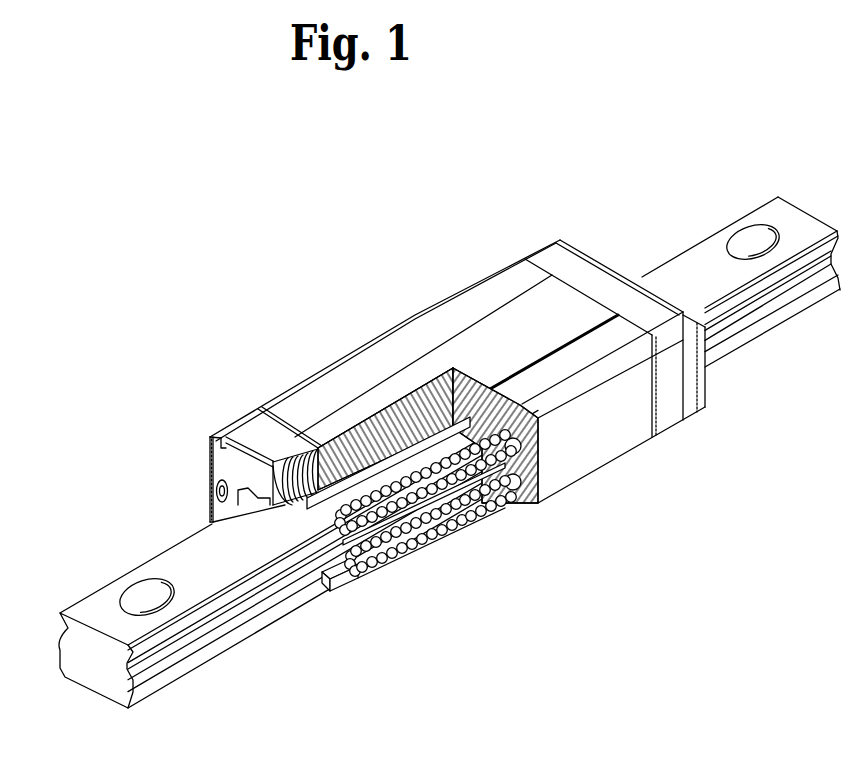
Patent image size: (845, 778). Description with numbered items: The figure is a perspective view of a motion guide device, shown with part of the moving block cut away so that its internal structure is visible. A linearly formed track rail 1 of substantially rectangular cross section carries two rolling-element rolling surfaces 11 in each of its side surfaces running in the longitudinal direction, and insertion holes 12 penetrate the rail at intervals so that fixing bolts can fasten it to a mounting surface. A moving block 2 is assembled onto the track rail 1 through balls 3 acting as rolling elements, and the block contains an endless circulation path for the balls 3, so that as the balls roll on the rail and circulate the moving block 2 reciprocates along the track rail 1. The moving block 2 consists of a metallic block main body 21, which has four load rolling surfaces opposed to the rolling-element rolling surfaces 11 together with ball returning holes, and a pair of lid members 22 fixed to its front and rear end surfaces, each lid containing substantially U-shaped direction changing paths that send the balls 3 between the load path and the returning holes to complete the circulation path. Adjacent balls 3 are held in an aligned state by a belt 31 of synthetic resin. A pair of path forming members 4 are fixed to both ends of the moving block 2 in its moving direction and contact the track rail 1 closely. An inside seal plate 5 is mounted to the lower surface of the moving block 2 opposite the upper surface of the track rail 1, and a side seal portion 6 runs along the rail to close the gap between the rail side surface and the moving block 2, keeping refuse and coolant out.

The track rail 1 is at (735, 215).
The moving block 2 is at (412, 318).
The balls 3 is at (462, 530).
The path forming members 4 is at (706, 390).
The inside seal plate 5 is at (320, 508).
The side seal portion 6 is at (333, 592).
The rolling-element rolling surfaces 11 is at (763, 283).
The insertion holes 12 is at (138, 604).
The block main body 21 is at (487, 300).
The lid members 22 is at (548, 262).
The belt 31 is at (400, 573).